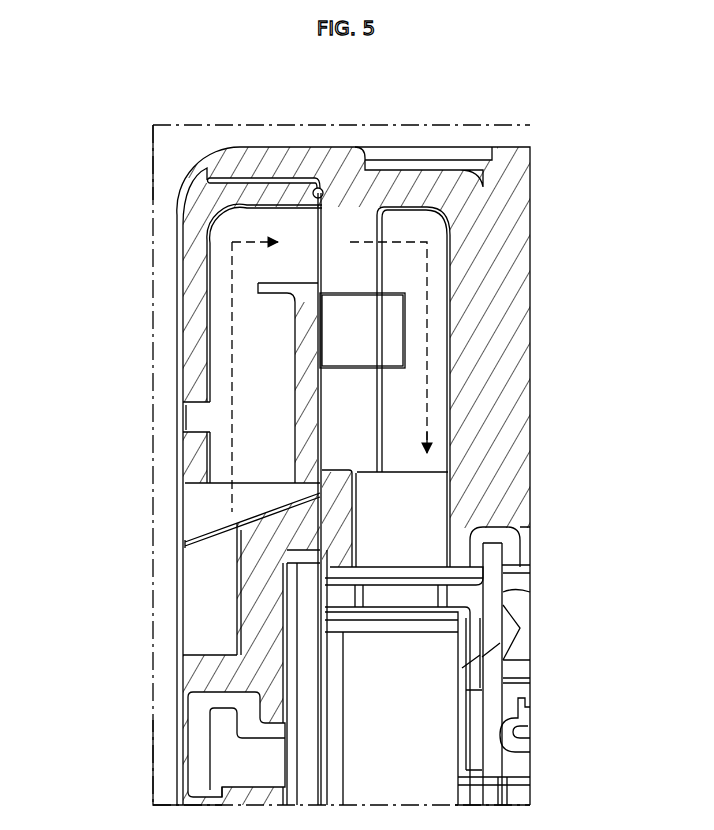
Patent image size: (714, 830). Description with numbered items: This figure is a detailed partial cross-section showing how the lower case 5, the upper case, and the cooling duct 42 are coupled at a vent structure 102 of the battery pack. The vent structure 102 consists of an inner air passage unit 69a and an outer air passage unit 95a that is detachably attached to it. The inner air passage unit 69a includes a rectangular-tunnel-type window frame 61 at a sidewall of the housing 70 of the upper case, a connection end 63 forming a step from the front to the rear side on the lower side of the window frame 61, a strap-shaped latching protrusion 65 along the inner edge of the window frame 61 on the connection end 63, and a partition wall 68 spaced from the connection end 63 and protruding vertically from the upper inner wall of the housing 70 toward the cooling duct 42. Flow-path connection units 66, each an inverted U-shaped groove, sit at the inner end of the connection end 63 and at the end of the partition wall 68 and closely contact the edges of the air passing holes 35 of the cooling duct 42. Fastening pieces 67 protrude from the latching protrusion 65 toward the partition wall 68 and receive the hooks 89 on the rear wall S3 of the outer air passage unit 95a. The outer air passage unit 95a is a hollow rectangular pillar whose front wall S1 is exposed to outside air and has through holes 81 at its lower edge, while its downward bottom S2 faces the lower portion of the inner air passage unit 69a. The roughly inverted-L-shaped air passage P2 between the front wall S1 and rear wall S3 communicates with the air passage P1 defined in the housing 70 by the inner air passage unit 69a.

The lower case 5 is at (260, 760).
The air passing holes 35 is at (300, 555).
The cooling duct 42 is at (222, 655).
The window frame 61 is at (291, 166).
The connection end 63 is at (255, 606).
The latching protrusion 65 is at (350, 480).
The flow-path connection units 66 is at (462, 545).
The fastening pieces 67 is at (360, 227).
The partition wall 68 is at (520, 268).
The inner air passage unit 69a is at (205, 166).
The housing 70 is at (532, 168).
The through holes 81 is at (173, 416).
The hooks 89 is at (393, 333).
The outer air passage unit 95a is at (200, 288).
The vent structure 102 is at (84, 150).
The front wall S1 is at (200, 348).
The downward bottom S2 is at (185, 538).
The rear wall S3 is at (315, 402).
The air passage P1 is at (430, 430).
The air passage P2 is at (232, 460).